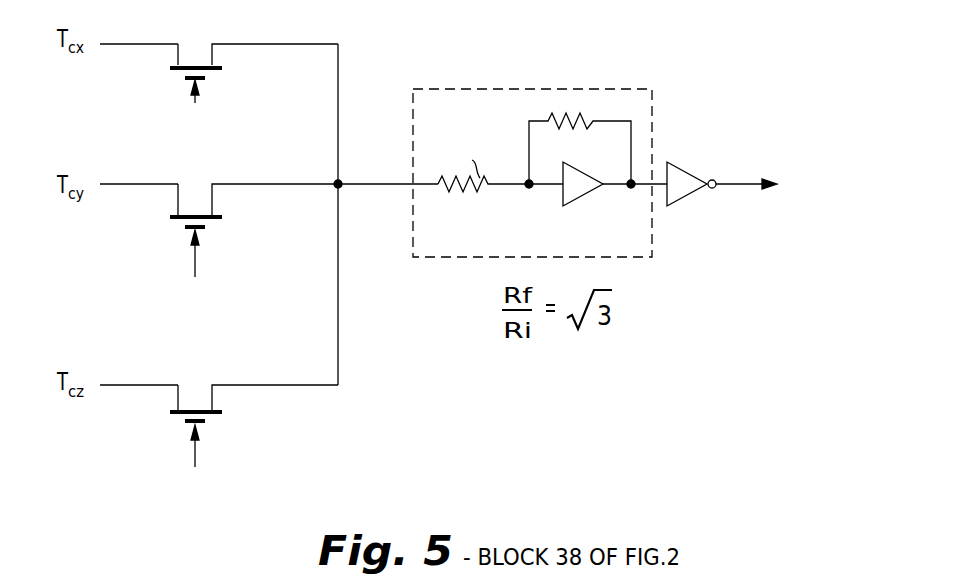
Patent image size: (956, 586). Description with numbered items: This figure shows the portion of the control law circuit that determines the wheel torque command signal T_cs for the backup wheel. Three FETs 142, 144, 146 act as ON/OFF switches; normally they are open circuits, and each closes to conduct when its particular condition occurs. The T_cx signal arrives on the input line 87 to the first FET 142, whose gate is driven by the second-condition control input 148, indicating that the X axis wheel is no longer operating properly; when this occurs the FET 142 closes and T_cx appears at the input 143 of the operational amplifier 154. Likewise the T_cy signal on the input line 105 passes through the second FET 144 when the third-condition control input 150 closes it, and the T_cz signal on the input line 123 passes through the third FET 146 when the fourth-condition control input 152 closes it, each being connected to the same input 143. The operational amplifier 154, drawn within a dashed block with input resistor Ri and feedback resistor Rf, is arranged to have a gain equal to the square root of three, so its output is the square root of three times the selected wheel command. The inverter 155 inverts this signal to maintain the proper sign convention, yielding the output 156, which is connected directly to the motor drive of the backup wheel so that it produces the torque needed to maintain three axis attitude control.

The Tcx input line 87 is at (118, 44).
The FET 142 is at (195, 56).
The 2nd condition control input 148 is at (205, 102).
The Tcy input line 105 is at (124, 184).
The FET 144 is at (196, 202).
The 3rd condition control input 150 is at (193, 258).
The Tcz input line 123 is at (120, 385).
The FET 146 is at (196, 398).
The 4th condition control input 152 is at (202, 452).
The input 143 is at (340, 182).
The operational amplifier 154 is at (505, 88).
The inverter 155 is at (681, 168).
The output 156 is at (723, 182).